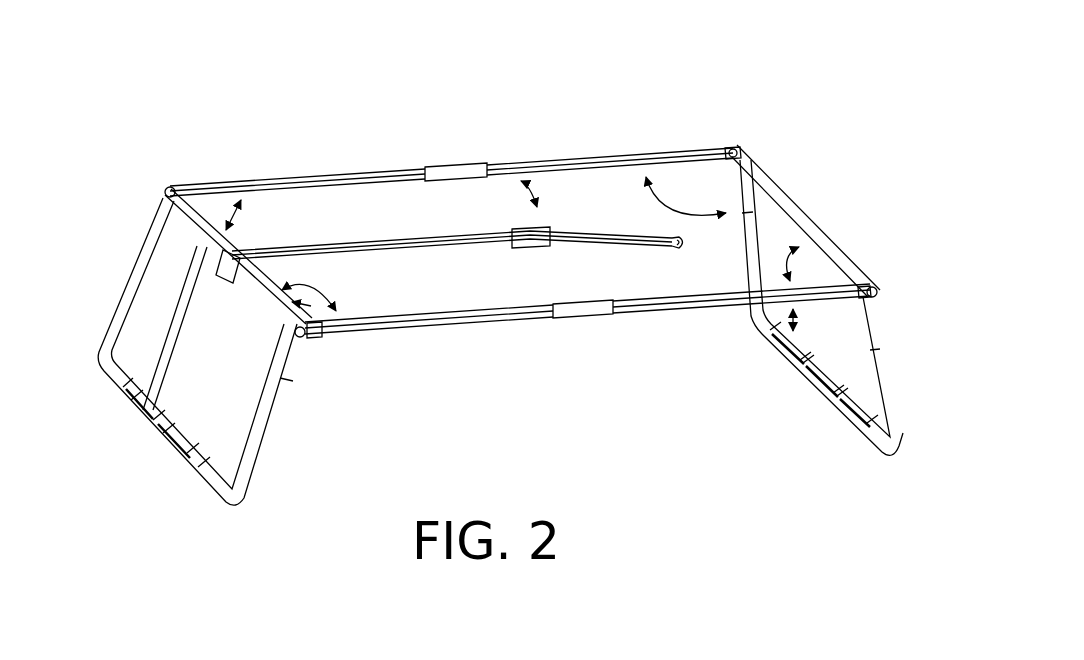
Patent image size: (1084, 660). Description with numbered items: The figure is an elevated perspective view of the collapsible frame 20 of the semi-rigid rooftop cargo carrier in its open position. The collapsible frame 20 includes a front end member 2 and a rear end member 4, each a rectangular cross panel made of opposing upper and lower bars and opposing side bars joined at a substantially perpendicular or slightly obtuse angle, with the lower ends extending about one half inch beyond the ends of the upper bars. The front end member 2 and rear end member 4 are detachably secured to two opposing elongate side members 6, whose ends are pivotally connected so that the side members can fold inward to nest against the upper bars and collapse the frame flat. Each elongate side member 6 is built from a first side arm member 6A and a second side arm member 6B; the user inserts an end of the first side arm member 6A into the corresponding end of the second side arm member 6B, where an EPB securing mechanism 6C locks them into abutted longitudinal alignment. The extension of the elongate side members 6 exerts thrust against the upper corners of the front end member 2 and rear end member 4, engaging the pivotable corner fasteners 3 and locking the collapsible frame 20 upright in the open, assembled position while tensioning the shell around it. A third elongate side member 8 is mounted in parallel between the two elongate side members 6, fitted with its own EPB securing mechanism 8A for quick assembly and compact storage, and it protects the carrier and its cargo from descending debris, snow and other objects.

The front end member 2 is at (147, 234).
The pivotable corner fasteners 3 is at (163, 188).
The rear end member 4 is at (888, 347).
The elongate side member 6 is at (752, 369).
The first side arm member 6A is at (255, 183).
The second side arm member 6B is at (570, 155).
The EPB securing mechanism 6C is at (447, 168).
The third elongate side member 8 is at (337, 248).
The EPB securing mechanism 8A is at (528, 238).
The collapsible frame 20 is at (790, 97).